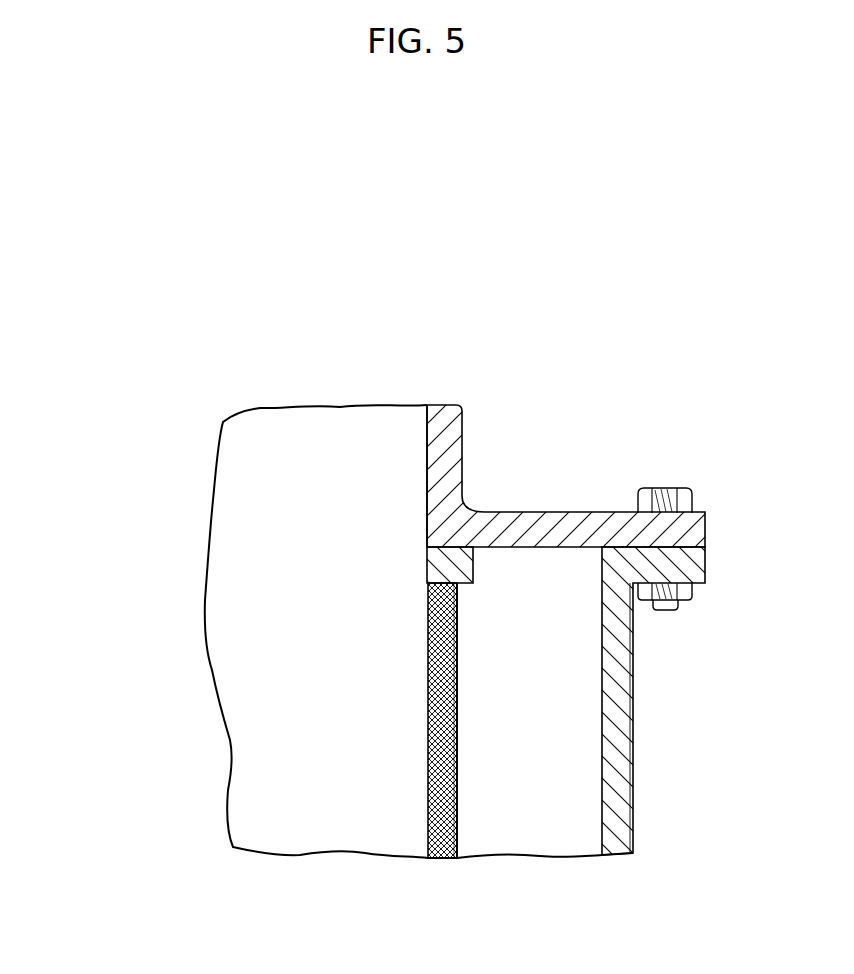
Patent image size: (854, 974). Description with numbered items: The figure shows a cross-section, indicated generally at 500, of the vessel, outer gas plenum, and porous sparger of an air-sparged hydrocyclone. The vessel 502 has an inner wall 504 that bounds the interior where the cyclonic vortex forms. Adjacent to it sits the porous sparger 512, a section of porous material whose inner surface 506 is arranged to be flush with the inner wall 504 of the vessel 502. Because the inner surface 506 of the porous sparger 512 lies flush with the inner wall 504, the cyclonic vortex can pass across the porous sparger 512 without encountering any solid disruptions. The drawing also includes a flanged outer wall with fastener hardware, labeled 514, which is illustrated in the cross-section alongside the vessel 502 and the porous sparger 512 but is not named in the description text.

The cross-section 500 is at (158, 252).
The vessel 502 is at (462, 438).
The inner wall 504 is at (427, 497).
The inner surface 506 is at (430, 792).
The porous sparger 512 is at (458, 657).
The outer wall with flange 514 is at (635, 718).